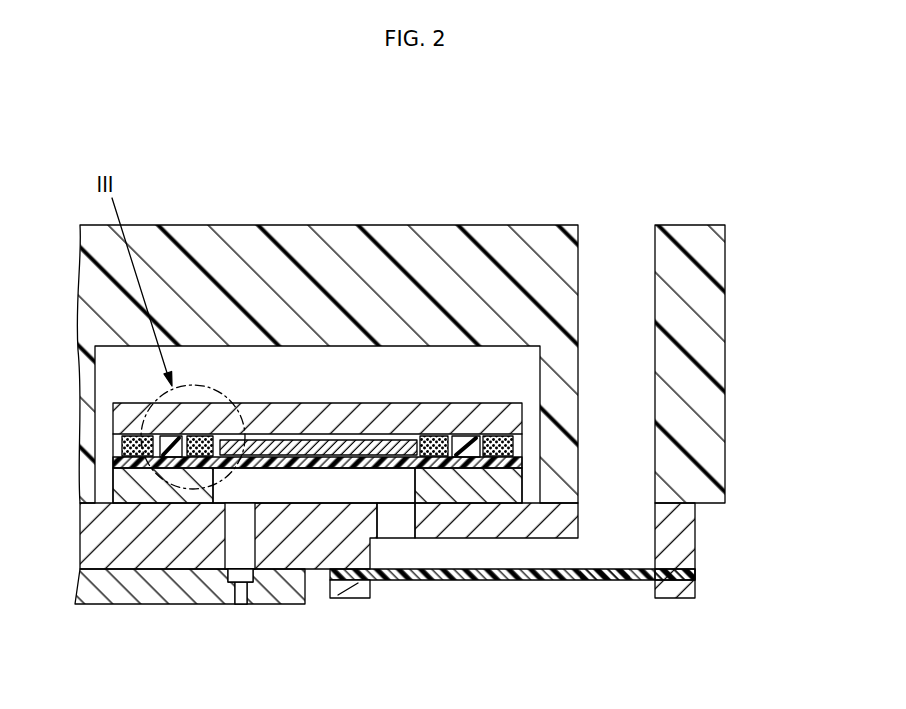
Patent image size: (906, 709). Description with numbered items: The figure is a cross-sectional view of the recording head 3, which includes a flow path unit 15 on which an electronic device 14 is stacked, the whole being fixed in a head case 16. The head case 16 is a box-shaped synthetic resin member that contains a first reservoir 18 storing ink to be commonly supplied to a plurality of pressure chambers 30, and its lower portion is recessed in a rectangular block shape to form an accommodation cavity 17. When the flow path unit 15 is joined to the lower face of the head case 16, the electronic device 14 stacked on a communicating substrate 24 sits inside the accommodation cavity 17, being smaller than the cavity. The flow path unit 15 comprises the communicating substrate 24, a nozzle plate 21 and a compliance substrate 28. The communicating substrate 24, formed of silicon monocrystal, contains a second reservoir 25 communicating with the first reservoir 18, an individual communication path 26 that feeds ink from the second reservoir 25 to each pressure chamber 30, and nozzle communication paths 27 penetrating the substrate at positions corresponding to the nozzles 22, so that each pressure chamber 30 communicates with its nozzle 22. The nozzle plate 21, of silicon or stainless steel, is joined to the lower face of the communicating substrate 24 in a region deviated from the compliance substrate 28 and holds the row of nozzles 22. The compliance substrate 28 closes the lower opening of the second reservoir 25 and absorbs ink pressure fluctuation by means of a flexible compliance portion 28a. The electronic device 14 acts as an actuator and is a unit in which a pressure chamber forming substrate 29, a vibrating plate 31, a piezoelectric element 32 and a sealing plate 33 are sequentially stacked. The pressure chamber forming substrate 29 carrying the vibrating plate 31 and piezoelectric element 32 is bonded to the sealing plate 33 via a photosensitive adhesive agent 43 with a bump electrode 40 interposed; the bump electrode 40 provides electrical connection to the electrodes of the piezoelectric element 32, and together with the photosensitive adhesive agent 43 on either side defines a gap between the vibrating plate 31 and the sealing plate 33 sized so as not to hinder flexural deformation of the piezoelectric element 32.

The recording head 3 is at (716, 190).
The electronic device 14 is at (522, 181).
The flow path unit 15 is at (693, 612).
The head case 16 is at (705, 282).
The accommodation cavity 17 is at (122, 383).
The first reservoir 18 is at (613, 260).
The nozzle plate 21 is at (270, 593).
The nozzle 22 is at (243, 596).
The communicating substrate 24 is at (690, 531).
The second reservoir 25 is at (507, 553).
The individual communication path 26 is at (388, 523).
The nozzle communication path 27 is at (232, 532).
The compliance substrate 28 is at (697, 575).
The compliance portion 28a is at (604, 578).
The pressure chamber forming substrate 29 is at (497, 478).
The pressure chamber 30 is at (308, 483).
The vibrating plate 31 is at (208, 462).
The piezoelectric element 32 is at (262, 447).
The sealing plate 33 is at (292, 423).
The bump electrode 40 is at (467, 443).
The photosensitive adhesive agent 43 is at (427, 445).